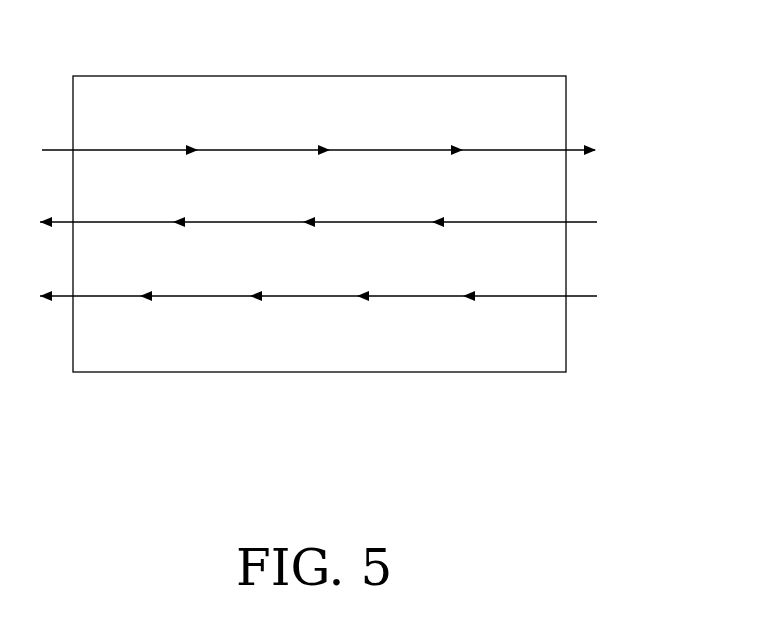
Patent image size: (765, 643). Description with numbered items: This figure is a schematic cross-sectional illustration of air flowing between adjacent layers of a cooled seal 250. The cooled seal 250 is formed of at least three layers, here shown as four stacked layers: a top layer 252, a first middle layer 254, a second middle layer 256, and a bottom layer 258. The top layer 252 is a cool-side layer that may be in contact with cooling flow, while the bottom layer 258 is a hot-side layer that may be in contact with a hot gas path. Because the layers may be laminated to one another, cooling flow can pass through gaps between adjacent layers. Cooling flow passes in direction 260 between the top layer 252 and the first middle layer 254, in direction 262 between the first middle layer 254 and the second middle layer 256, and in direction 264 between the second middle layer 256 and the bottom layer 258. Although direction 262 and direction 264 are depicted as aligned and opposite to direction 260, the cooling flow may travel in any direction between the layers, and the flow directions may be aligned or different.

The cooled seal 250 is at (365, 196).
The top layer 252 is at (317, 112).
The first middle layer 254 is at (317, 188).
The second middle layer 256 is at (317, 267).
The bottom layer 258 is at (317, 340).
The direction 260 is at (319, 132).
The direction 262 is at (318, 204).
The direction 264 is at (318, 279).